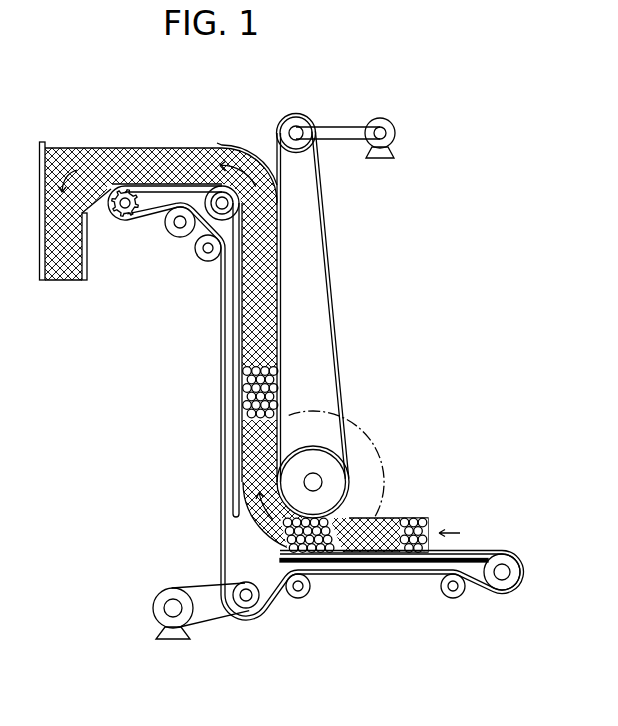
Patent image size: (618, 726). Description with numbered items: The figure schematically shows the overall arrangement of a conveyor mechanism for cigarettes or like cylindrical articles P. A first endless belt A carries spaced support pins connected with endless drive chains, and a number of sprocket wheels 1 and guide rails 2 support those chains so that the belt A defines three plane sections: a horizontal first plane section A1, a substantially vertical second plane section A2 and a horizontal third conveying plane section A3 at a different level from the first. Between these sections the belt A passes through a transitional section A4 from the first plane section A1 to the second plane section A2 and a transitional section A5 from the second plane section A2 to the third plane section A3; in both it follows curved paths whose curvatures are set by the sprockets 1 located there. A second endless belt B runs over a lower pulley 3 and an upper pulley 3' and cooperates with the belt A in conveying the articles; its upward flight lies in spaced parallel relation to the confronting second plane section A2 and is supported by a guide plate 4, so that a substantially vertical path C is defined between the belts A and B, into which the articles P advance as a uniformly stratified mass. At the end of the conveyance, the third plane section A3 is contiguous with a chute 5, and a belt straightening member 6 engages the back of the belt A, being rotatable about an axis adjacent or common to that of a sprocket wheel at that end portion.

The sprocket wheels 1 is at (197, 248).
The guide rails 2 is at (156, 193).
The lower pulley 3 is at (313, 442).
The upper pulley 3' is at (296, 111).
The guide plate 4 is at (282, 283).
The chute 5 is at (87, 256).
The belt straightening member 6 is at (113, 187).
The first endless belt A is at (220, 368).
The first plane section A1 is at (468, 551).
The second plane section A2 is at (238, 327).
The third conveying plane section A3 is at (162, 186).
The transitional section A4 is at (265, 533).
The transitional section A5 is at (258, 190).
The second endless belt B is at (327, 208).
The substantially vertical path C is at (277, 320).
The cylindrical articles P is at (258, 368).